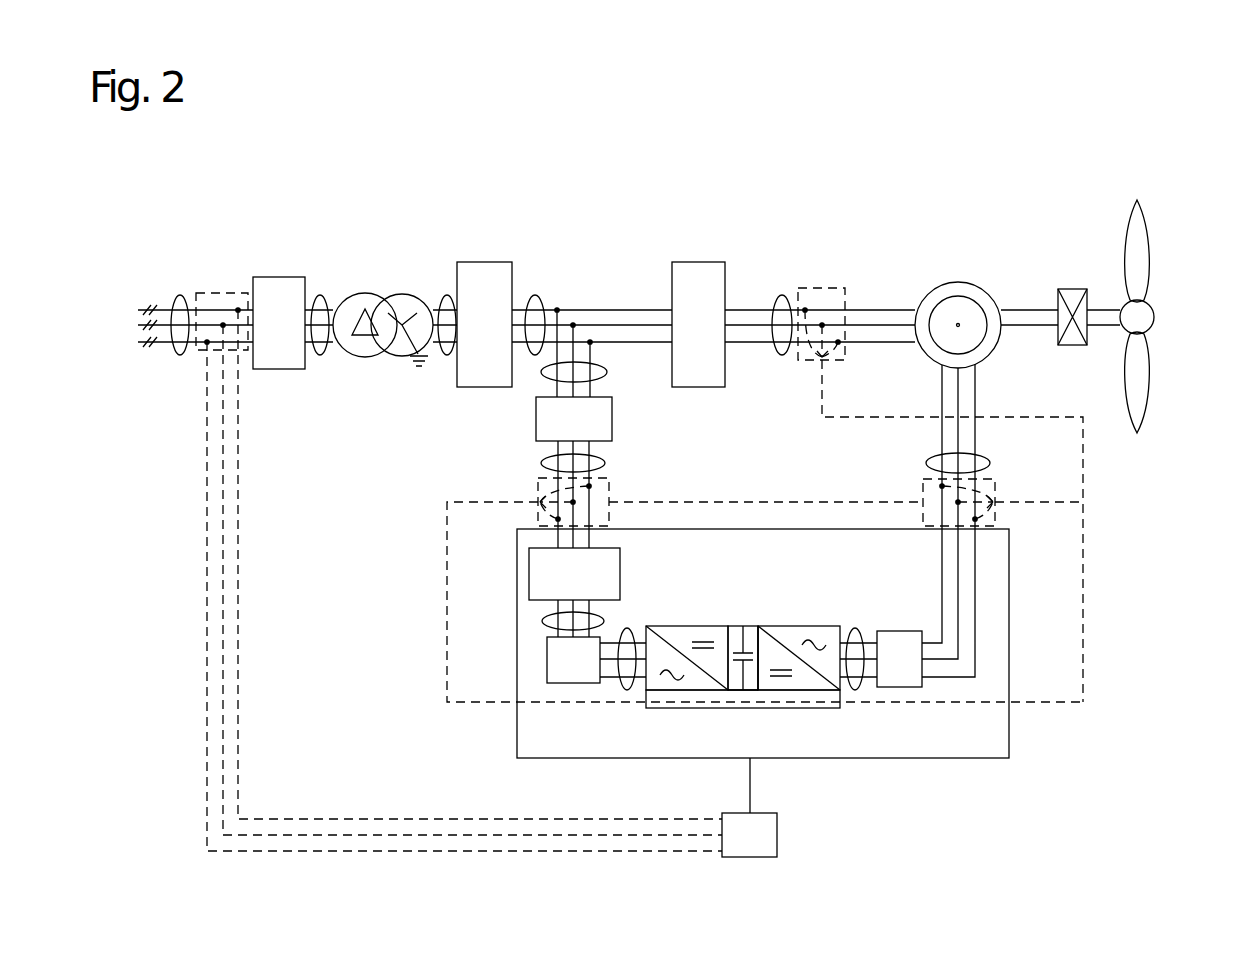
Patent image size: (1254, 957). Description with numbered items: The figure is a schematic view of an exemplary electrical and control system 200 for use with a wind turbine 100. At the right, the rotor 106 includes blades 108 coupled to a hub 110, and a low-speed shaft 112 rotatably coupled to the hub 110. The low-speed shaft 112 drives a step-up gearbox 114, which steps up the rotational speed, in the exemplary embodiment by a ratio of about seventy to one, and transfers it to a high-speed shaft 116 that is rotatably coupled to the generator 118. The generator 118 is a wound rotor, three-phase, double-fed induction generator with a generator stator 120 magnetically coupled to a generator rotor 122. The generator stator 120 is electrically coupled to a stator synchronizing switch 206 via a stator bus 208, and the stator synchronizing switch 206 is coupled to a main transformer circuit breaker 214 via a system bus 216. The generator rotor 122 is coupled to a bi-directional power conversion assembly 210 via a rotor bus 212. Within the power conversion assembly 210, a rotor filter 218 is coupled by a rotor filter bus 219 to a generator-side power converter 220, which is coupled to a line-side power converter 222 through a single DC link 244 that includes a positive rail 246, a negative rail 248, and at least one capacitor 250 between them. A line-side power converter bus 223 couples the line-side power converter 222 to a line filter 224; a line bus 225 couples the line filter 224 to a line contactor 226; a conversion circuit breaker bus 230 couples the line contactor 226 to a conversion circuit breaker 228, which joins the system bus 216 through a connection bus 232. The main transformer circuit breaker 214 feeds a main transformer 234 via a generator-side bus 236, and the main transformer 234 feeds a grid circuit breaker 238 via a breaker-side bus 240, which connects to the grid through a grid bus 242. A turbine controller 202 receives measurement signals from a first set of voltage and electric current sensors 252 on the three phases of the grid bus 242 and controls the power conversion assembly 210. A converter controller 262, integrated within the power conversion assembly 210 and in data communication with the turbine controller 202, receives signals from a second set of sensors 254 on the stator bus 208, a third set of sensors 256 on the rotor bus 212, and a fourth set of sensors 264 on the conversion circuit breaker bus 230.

The wind turbine 100 is at (1126, 182).
The rotor 106 is at (1161, 294).
The blades 108 is at (1150, 255).
The hub 110 is at (1157, 317).
The low-speed shaft 112 is at (1100, 310).
The step-up gearbox 114 is at (1068, 289).
The high-speed shaft 116 is at (1028, 310).
The generator 118 is at (961, 246).
The generator stator 120 is at (958, 282).
The generator rotor 122 is at (953, 305).
The electrical and control system 200 is at (215, 192).
The turbine controller 202 is at (732, 849).
The stator synchronizing switch 206 is at (700, 262).
The stator bus 208 is at (782, 295).
The power conversion assembly 210 is at (1009, 640).
The rotor bus 212 is at (990, 463).
The main transformer circuit breaker 214 is at (485, 262).
The system bus 216 is at (535, 294).
The rotor filter 218 is at (895, 640).
The rotor filter bus 219 is at (855, 628).
The generator-side power converter 220 is at (845, 690).
The line-side power converter 222 is at (646, 690).
The line-side power converter bus 223 is at (625, 630).
The line filter 224 is at (547, 660).
The line bus 225 is at (545, 621).
The line contactor 226 is at (529, 575).
The conversion circuit breaker 228 is at (612, 420).
The conversion circuit breaker bus 230 is at (605, 463).
The connection bus 232 is at (607, 372).
The main transformer 234 is at (402, 294).
The generator-side bus 236 is at (447, 292).
The grid circuit breaker 238 is at (278, 277).
The breaker-side bus 240 is at (320, 295).
The grid bus 242 is at (180, 294).
The DC link 244 is at (727, 578).
The positive rail 246 is at (760, 627).
The negative rail 248 is at (755, 690).
The capacitor 250 is at (743, 650).
The first set of voltage and electric current sensors 252 is at (197, 364).
The second set of voltage and electric current sensors 254 is at (837, 286).
The third set of voltage and electric current sensors 256 is at (905, 497).
The converter controller 262 is at (800, 700).
The fourth set of voltage and electric current sensors 264 is at (609, 502).